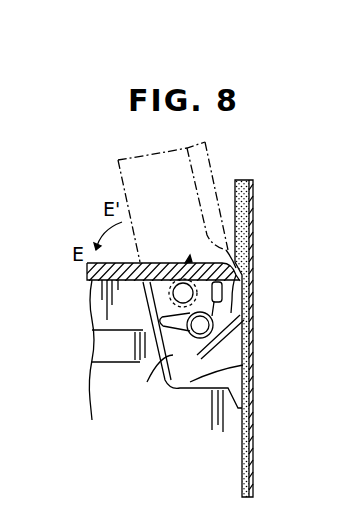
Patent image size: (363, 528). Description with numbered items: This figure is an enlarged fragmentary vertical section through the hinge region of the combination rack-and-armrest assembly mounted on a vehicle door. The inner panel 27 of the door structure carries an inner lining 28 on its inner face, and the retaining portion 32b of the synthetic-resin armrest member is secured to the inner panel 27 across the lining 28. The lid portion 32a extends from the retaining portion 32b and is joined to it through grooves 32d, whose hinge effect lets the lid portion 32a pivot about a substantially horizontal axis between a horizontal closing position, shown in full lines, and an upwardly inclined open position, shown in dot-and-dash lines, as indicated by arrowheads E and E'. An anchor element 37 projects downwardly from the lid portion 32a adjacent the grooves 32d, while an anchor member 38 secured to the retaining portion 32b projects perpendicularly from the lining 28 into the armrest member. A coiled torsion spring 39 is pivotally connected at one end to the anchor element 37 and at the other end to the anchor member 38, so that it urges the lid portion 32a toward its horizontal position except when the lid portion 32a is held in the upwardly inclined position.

The inner panel 27 is at (252, 448).
The inner lining 28 is at (241, 478).
The lid portion 32a is at (96, 286).
The retaining portion 32b is at (231, 313).
The grooves 32d is at (253, 276).
The anchor elements 37 is at (222, 291).
The anchor members 38 is at (163, 362).
The coiled torsion springs 39 is at (203, 365).